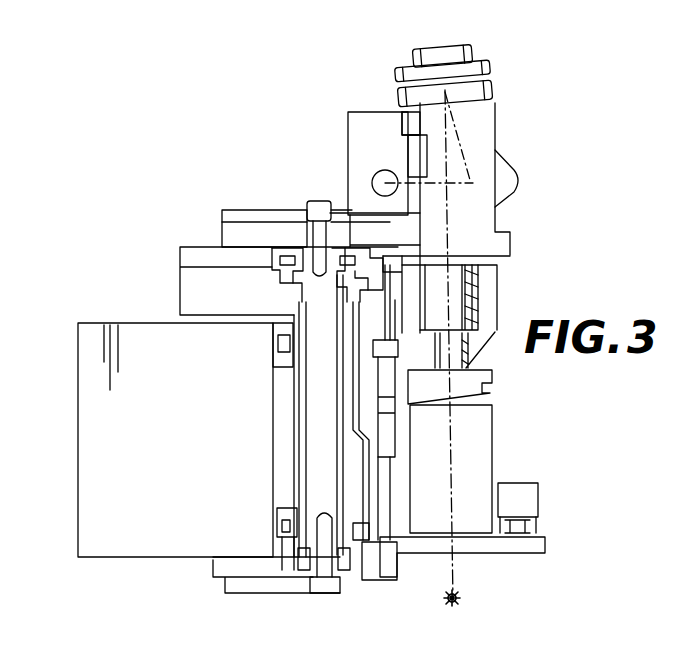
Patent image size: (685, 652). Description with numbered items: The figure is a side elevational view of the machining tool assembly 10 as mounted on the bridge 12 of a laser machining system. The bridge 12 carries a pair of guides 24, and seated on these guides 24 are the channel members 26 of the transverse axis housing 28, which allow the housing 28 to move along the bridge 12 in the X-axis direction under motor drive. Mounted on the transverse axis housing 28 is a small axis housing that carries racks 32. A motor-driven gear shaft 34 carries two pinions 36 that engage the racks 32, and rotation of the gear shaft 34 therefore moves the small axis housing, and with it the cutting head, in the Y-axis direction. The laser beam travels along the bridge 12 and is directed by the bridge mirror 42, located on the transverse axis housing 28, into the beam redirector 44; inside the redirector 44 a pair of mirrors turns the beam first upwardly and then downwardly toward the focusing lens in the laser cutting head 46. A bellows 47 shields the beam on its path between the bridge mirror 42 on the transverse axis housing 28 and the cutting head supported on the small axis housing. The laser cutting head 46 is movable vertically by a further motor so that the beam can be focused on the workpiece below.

The machining tool assembly 10 is at (582, 150).
The bridge 12 is at (80, 412).
The guides 24 is at (278, 527).
The channel members 26 is at (283, 570).
The transverse axis housing 28 is at (200, 228).
The racks 32 is at (231, 595).
The gear shaft 34 is at (316, 381).
The pinions 36 is at (315, 201).
The bridge mirror 42 is at (348, 130).
The beam redirector 44 is at (494, 108).
The laser cutting head 46 is at (492, 448).
The bellows 47 is at (410, 152).